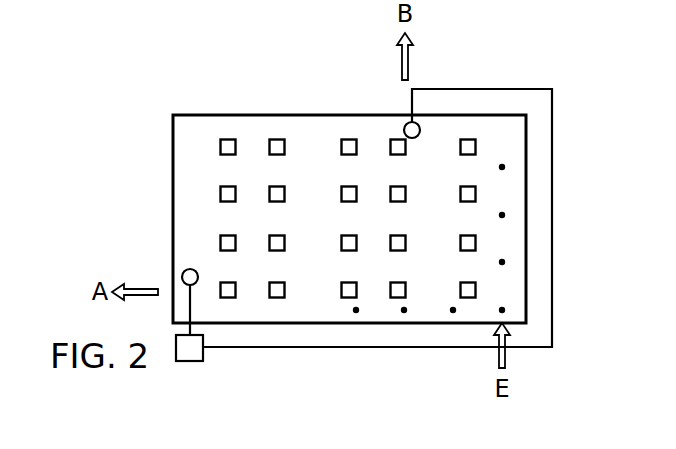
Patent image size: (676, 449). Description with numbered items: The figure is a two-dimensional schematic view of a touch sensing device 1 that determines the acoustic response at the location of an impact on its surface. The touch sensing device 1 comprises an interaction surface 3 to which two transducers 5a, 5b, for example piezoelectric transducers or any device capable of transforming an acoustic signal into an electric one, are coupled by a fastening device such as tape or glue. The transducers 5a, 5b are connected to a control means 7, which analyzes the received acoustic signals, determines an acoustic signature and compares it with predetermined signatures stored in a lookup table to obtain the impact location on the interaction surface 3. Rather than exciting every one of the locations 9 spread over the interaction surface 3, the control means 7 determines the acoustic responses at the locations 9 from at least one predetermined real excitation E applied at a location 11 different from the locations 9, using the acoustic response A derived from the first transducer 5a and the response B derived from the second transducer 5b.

The touch sensing device 1 is at (150, 101).
The interaction surface 3 is at (449, 89).
The first transducer 5a is at (184, 272).
The second transducer 5b is at (405, 124).
The control means 7 is at (198, 362).
The locations 9 is at (229, 139).
The location of real excitation 11 is at (505, 310).